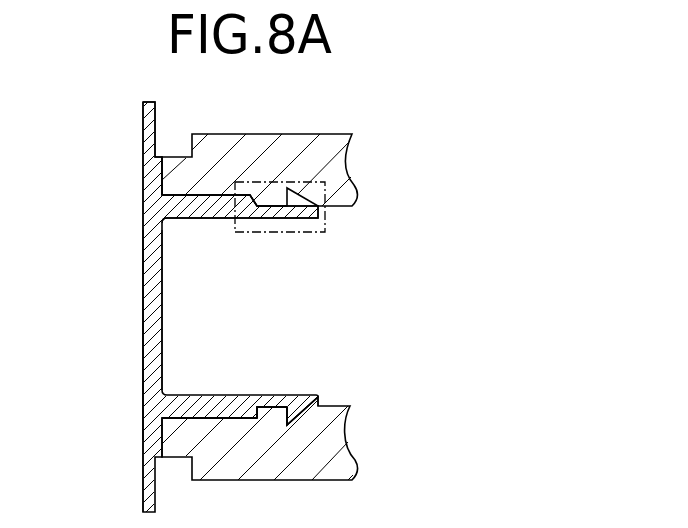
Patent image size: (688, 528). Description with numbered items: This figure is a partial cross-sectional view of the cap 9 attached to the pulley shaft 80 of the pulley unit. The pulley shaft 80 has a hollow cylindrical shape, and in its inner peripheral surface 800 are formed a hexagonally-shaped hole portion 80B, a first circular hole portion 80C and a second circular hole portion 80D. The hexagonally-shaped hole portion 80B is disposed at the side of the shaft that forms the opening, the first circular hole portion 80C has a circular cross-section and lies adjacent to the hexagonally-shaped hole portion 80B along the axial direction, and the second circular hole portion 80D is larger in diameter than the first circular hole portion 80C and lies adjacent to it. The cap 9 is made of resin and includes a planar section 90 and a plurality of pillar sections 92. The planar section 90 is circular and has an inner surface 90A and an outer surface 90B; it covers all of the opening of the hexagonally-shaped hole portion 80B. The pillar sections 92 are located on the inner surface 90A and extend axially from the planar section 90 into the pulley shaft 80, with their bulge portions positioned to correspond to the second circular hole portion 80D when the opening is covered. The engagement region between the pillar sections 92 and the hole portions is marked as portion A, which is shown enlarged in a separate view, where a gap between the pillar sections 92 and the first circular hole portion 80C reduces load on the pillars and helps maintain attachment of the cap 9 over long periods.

The cap 9 is at (132, 417).
The pulley shaft 80 is at (282, 155).
The inner peripheral surface 800 is at (390, 345).
The hexagonally-shaped hole portion 80B is at (222, 408).
The first circular hole portion 80C is at (275, 408).
The second circular hole portion 80D is at (307, 400).
The planar section 90 is at (142, 343).
The inner surface 90A is at (162, 286).
The outer surface 90B is at (143, 170).
The pillar section 92 is at (193, 212).
The portion A is at (263, 233).